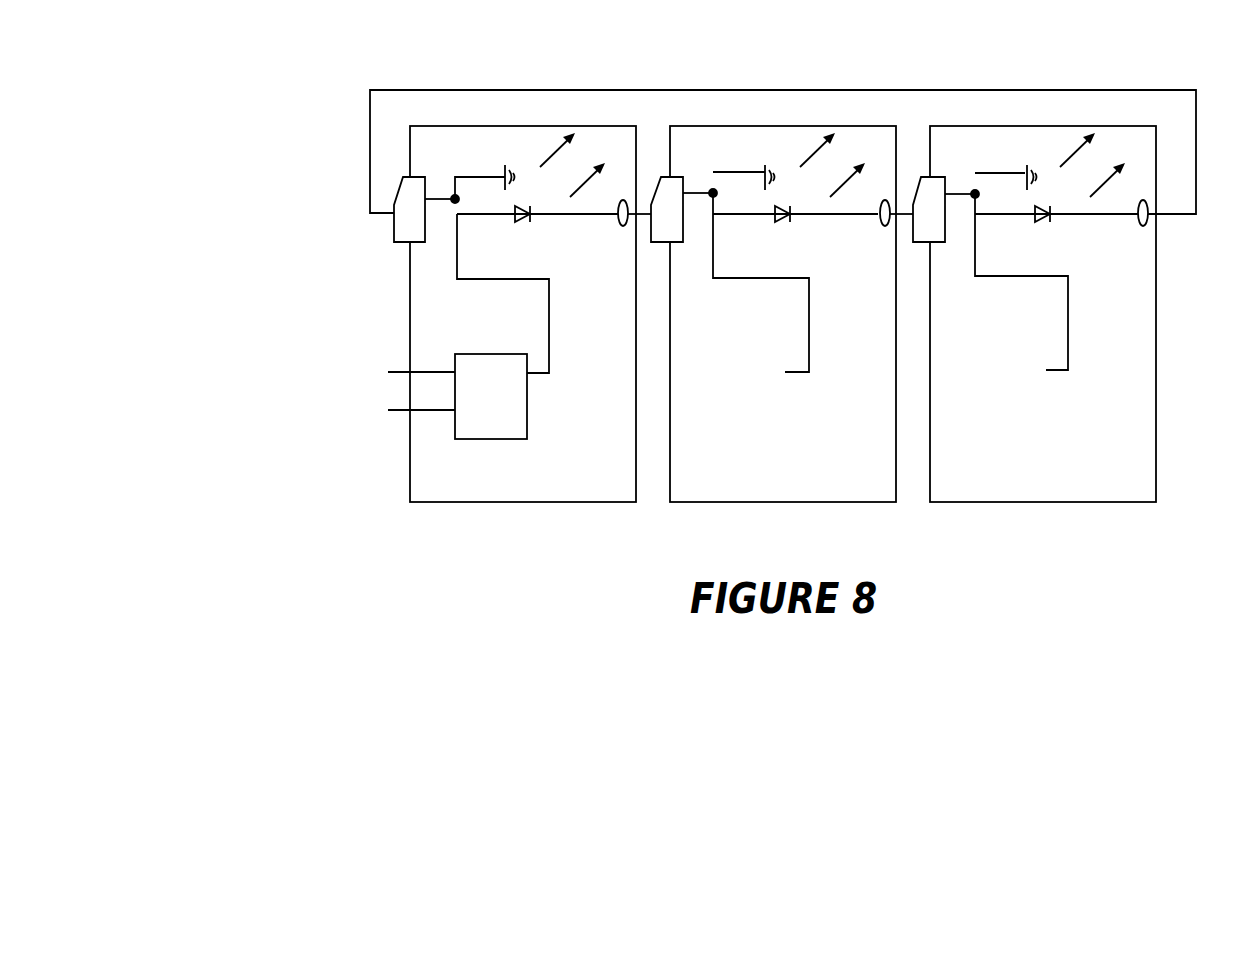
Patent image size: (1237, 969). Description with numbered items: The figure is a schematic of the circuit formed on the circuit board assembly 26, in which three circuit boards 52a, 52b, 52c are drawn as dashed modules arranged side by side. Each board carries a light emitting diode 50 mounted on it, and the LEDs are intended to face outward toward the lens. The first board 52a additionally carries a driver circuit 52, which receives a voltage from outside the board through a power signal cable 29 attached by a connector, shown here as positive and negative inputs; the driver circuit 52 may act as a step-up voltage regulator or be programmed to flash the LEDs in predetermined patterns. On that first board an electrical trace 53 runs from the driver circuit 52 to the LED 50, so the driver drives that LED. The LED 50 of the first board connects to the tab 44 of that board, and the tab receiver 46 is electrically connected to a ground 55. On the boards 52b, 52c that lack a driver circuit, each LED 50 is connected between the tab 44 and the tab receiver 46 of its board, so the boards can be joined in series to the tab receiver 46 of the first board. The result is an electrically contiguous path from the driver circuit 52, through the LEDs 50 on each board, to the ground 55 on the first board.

The circuit board assembly 26 is at (352, 507).
The power signal cable 29 is at (236, 434).
The tab 44 is at (635, 180).
The tab receiver 46 is at (925, 249).
The light emitting diode 50 is at (798, 233).
The driver circuit 52 is at (478, 407).
The first circuit board 52a is at (575, 491).
The second circuit board 52b is at (840, 491).
The third circuit board 52c is at (1102, 491).
The electrical trace 53 is at (766, 306).
The ground 55 is at (720, 121).